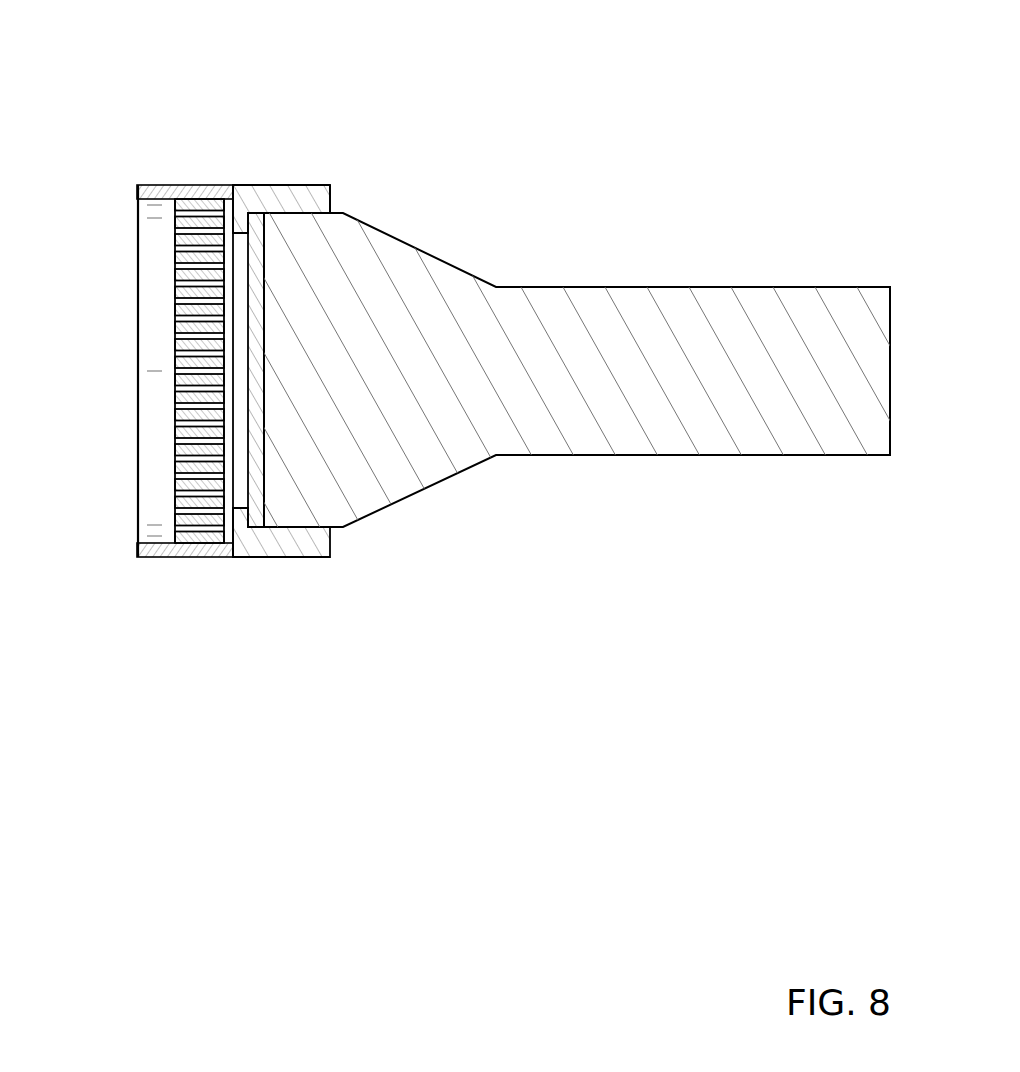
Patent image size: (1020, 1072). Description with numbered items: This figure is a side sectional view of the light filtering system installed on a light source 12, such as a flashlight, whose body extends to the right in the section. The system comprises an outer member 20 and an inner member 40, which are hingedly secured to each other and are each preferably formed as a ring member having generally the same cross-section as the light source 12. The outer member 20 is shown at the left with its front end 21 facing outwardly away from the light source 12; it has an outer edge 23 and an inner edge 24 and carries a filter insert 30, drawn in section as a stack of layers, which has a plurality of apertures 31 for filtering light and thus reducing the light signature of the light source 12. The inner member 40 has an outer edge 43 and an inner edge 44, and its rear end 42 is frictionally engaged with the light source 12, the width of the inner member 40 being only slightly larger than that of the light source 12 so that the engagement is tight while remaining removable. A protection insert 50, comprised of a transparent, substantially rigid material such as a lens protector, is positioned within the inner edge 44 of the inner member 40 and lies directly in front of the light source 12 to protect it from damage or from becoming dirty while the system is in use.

The light source 12 is at (718, 287).
The outer member 20 is at (162, 192).
The front end 21 is at (137, 261).
The outer edge 23 is at (132, 283).
The inner edge 24 is at (157, 325).
The filter insert 30 is at (175, 451).
The apertures 31 is at (177, 479).
The inner member 40 is at (298, 197).
The rear end 42 is at (330, 200).
The outer edge 43 is at (285, 557).
The inner edge 44 is at (300, 527).
The protection insert 50 is at (256, 248).